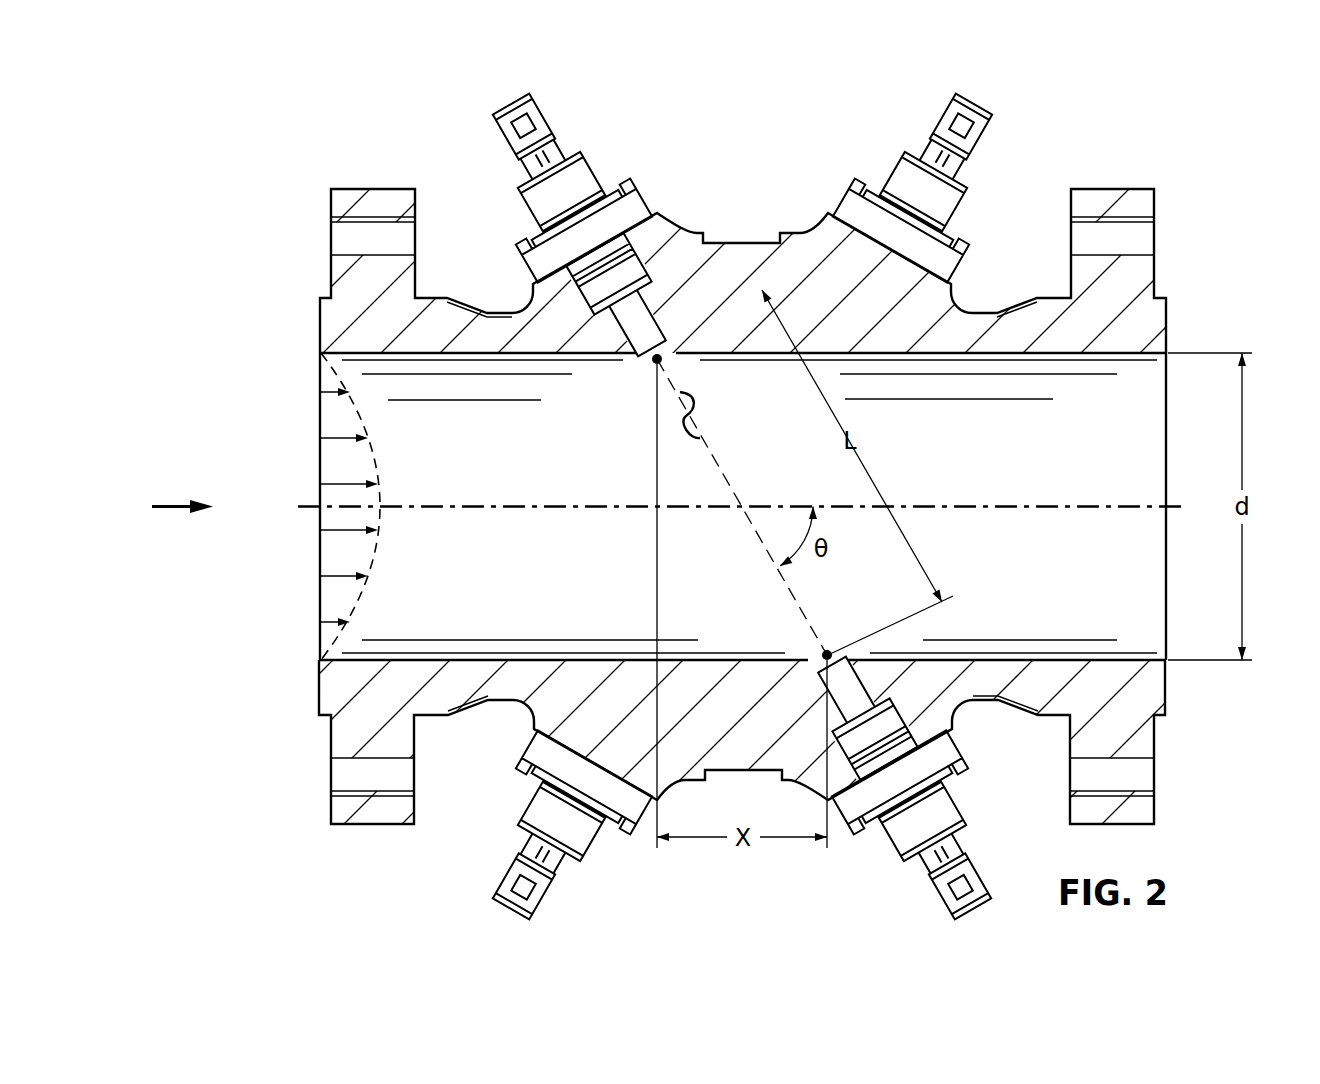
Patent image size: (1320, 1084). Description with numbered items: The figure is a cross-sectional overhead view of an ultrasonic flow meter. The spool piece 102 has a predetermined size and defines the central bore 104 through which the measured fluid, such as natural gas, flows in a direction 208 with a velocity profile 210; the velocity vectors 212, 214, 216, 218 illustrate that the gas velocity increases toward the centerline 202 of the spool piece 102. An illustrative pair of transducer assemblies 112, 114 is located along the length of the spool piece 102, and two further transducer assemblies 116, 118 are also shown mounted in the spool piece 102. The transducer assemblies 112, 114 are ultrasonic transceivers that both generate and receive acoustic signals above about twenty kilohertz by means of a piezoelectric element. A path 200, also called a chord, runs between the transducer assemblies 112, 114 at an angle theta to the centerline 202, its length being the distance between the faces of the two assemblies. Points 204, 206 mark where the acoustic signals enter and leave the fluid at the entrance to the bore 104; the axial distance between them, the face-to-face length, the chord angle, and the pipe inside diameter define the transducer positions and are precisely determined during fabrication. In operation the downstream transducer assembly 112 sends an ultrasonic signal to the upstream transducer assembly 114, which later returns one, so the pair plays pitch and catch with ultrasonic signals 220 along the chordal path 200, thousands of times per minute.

The spool piece 102 is at (744, 243).
The central bore 104 is at (963, 458).
The transducer assembly 112 is at (937, 893).
The transducer assembly 114 is at (593, 172).
The ultrasonic transducer 116 is at (553, 893).
The ultrasonic transducer 118 is at (938, 120).
The path 200 is at (793, 600).
The centerline 202 is at (1023, 511).
The point 204 is at (835, 650).
The point 206 is at (647, 364).
The direction 208 is at (175, 505).
The velocity profile 210 is at (375, 455).
The velocity vector 212 is at (318, 440).
The velocity vector 214 is at (318, 485).
The velocity vector 216 is at (318, 530).
The velocity vector 218 is at (318, 576).
The ultrasonic signals 220 is at (698, 404).